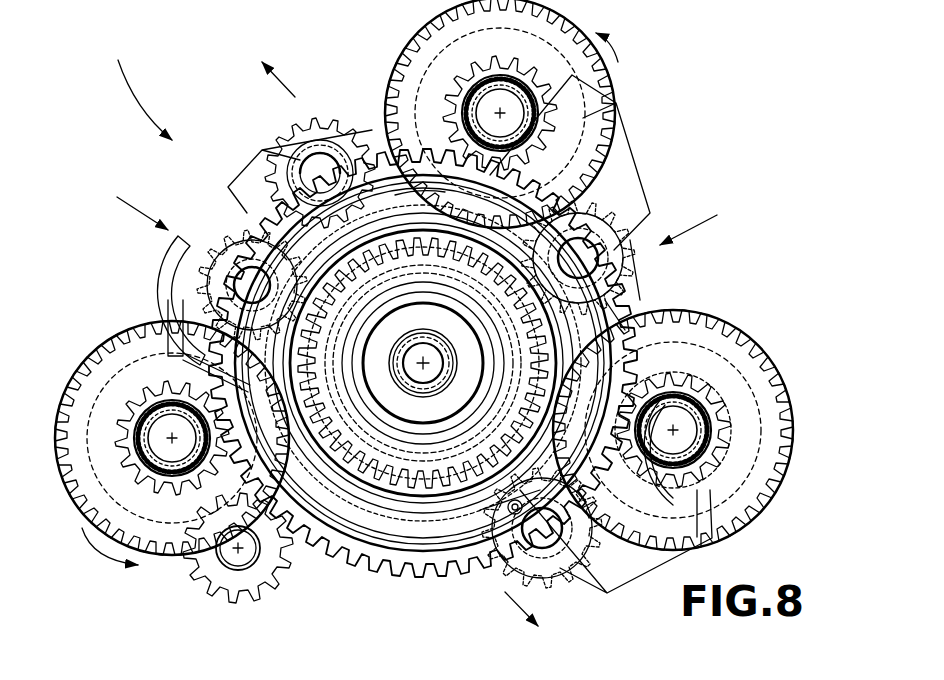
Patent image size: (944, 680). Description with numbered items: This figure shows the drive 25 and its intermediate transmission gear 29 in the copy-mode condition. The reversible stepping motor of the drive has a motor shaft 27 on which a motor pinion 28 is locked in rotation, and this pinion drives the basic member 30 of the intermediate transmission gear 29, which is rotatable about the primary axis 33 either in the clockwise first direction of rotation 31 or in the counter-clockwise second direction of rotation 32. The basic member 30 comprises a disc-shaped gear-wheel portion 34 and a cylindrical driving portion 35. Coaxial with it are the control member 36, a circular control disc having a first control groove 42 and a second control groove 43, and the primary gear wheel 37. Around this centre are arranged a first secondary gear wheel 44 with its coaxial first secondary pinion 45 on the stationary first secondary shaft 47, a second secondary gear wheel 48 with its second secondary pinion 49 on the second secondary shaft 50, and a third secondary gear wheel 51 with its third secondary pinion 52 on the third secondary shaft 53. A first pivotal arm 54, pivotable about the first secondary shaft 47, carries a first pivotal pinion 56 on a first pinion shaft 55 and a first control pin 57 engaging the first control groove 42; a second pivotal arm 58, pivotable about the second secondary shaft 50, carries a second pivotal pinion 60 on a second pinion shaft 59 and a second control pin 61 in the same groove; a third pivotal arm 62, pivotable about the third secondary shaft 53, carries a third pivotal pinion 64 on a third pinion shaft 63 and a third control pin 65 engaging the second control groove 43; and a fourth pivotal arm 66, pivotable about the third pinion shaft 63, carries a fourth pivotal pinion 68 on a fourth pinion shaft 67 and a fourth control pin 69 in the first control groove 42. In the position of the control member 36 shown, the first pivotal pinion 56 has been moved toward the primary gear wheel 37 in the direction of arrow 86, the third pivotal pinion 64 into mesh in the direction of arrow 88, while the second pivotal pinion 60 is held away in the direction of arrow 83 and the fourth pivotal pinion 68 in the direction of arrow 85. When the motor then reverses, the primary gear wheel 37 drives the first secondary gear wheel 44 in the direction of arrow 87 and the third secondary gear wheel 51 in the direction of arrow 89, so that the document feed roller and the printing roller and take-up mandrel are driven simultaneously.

The drive 25 is at (124, 52).
The motor shaft 27 is at (216, 554).
The motor pinion 28 is at (225, 596).
The intermediate transmission gear 29 is at (333, 598).
The basic member 30 is at (372, 586).
The first direction of rotation 31 is at (455, 601).
The second direction of rotation 32 is at (432, 596).
The primary axis 33 is at (425, 365).
The disc-shaped gear-wheel portion 34 is at (316, 567).
The cylindrical driving portion 35 is at (475, 343).
The control member 36 is at (365, 545).
The primary gear wheel 37 is at (370, 548).
The first control groove 42 is at (642, 382).
The second control groove 43 is at (340, 366).
The first secondary gear wheel 44 is at (418, 46).
The first secondary pinion 45 is at (466, 92).
The first secondary shaft 47 is at (502, 108).
The second secondary gear wheel 48 is at (756, 365).
The second secondary pinion 49 is at (706, 388).
The second secondary shaft 50 is at (692, 429).
The third secondary gear wheel 51 is at (154, 332).
The third secondary pinion 52 is at (144, 418).
The third secondary shaft 53 is at (135, 444).
The first pivotal arm 54 is at (627, 155).
The first pinion shaft 55 is at (596, 212).
The first pivotal pinion 56 is at (640, 276).
The first control pin 57 is at (625, 298).
The second pivotal arm 58 is at (660, 577).
The second pinion shaft 59 is at (520, 584).
The second pivotal pinion 60 is at (593, 549).
The second control pin 61 is at (488, 518).
The third pivotal arm 62 is at (178, 284).
The third pinion shaft 63 is at (202, 270).
The third pivotal pinion 64 is at (208, 240).
The third control pin 65 is at (392, 360).
The fourth pivotal arm 66 is at (245, 180).
The fourth pinion shaft 67 is at (300, 148).
The fourth pivotal pinion 68 is at (361, 130).
The fourth control pin 69 is at (420, 224).
The arrow 83 is at (542, 630).
The arrow 85 is at (290, 108).
The arrow 86 is at (697, 230).
The arrow 87 is at (617, 75).
The arrow 88 is at (120, 213).
The arrow 89 is at (96, 542).